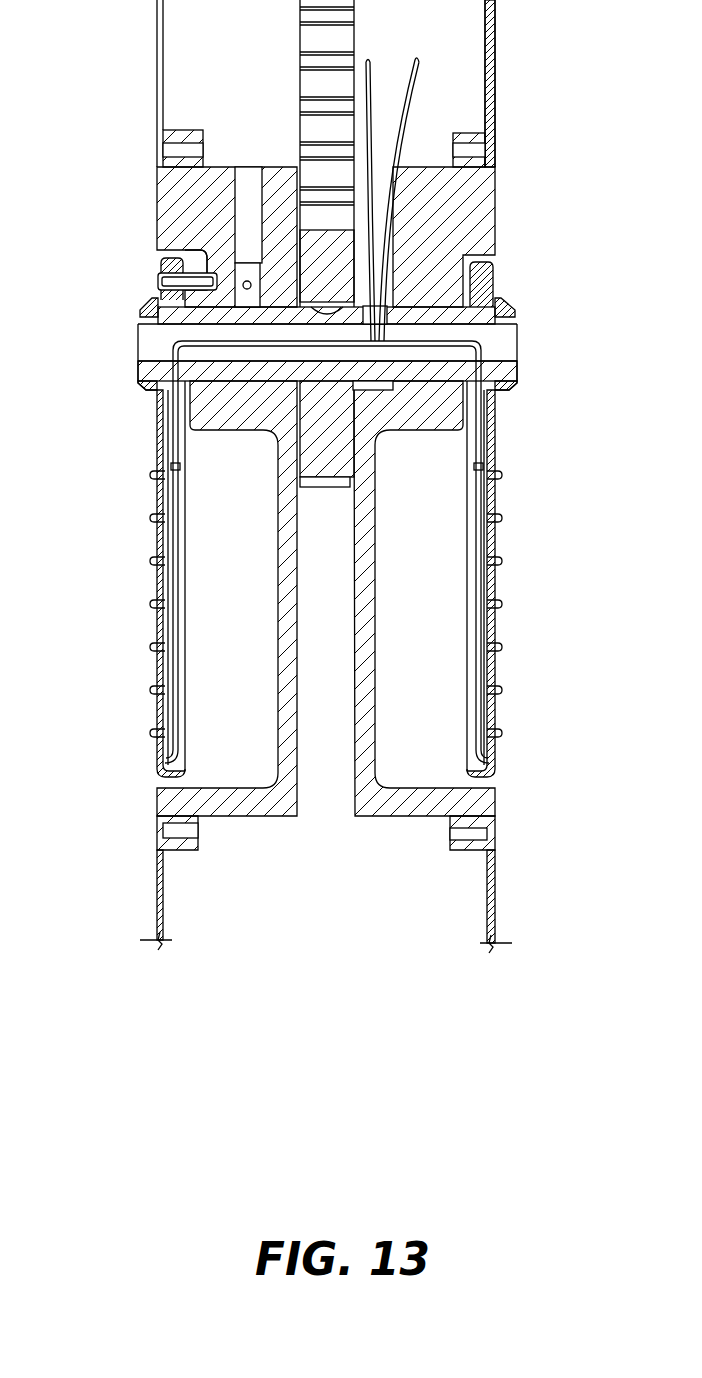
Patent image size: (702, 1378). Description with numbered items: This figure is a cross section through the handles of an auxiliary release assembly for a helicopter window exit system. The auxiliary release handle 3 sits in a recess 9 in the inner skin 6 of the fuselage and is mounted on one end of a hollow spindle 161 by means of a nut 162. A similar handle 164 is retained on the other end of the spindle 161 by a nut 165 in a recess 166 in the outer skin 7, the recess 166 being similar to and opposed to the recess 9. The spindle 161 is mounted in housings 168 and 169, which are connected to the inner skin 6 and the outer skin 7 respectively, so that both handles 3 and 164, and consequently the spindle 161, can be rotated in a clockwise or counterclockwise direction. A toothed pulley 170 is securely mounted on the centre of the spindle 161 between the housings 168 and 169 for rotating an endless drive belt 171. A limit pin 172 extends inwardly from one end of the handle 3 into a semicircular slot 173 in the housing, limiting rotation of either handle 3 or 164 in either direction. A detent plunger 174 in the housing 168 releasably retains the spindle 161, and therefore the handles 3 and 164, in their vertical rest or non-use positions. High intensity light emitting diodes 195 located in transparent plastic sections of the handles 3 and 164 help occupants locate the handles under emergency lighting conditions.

The auxiliary release handle 3 is at (157, 583).
The inner skin 6 is at (157, 890).
The outer skin 7 is at (495, 890).
The recess 9 is at (278, 688).
The hollow spindle 161 is at (517, 342).
The nut 162 is at (140, 304).
The handle 164 is at (497, 496).
The nut 165 is at (512, 388).
The recess 166 is at (375, 567).
The housing 168 is at (170, 197).
The housing 169 is at (497, 207).
The toothed pulley 170 is at (298, 465).
The endless drive belt 171 is at (310, 86).
The limit pin 172 is at (165, 282).
The semicircular slot 173 is at (205, 268).
The detent plunger 174 is at (247, 263).
The light emitting diodes 195 is at (150, 733).